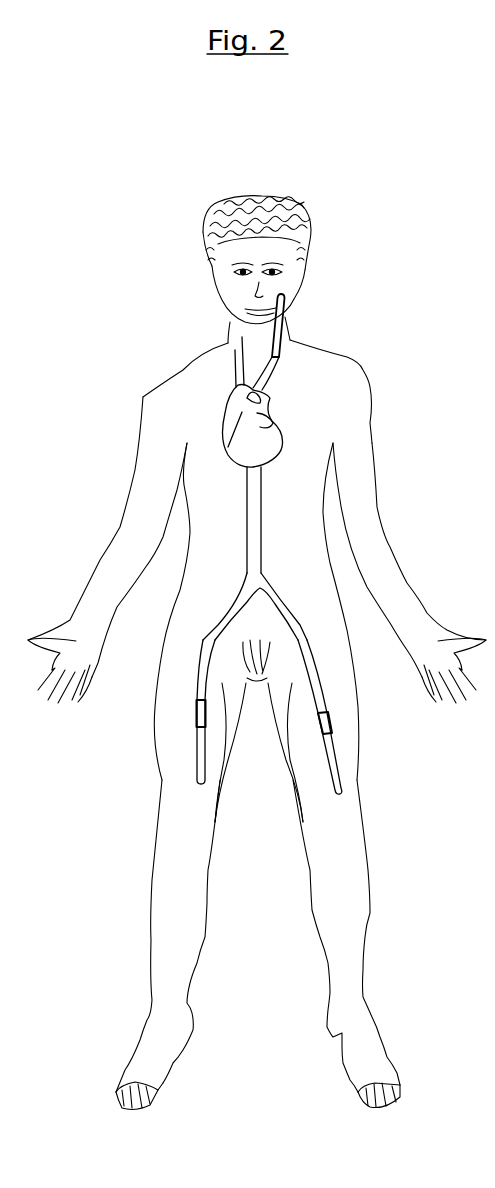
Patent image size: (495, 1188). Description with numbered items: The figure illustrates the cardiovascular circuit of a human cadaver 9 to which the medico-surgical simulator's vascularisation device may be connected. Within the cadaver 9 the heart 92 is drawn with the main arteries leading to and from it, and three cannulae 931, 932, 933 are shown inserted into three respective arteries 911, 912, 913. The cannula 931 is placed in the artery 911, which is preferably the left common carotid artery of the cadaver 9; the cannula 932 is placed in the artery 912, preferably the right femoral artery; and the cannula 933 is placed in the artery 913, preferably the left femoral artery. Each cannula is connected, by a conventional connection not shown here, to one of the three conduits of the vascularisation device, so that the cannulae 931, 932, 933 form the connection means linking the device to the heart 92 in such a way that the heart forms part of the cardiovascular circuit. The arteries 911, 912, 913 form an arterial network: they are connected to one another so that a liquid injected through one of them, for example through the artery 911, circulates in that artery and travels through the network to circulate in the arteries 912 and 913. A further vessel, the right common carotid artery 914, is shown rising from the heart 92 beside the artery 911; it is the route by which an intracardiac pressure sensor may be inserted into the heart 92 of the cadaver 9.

The human cadaver 9 is at (288, 156).
The heart 92 is at (263, 449).
The right common carotid artery 914 is at (240, 378).
The cannula 931 is at (284, 303).
The artery 911 is at (279, 362).
The artery 912 is at (197, 708).
The cannula 932 is at (197, 768).
The artery 913 is at (324, 713).
The cannula 933 is at (336, 776).